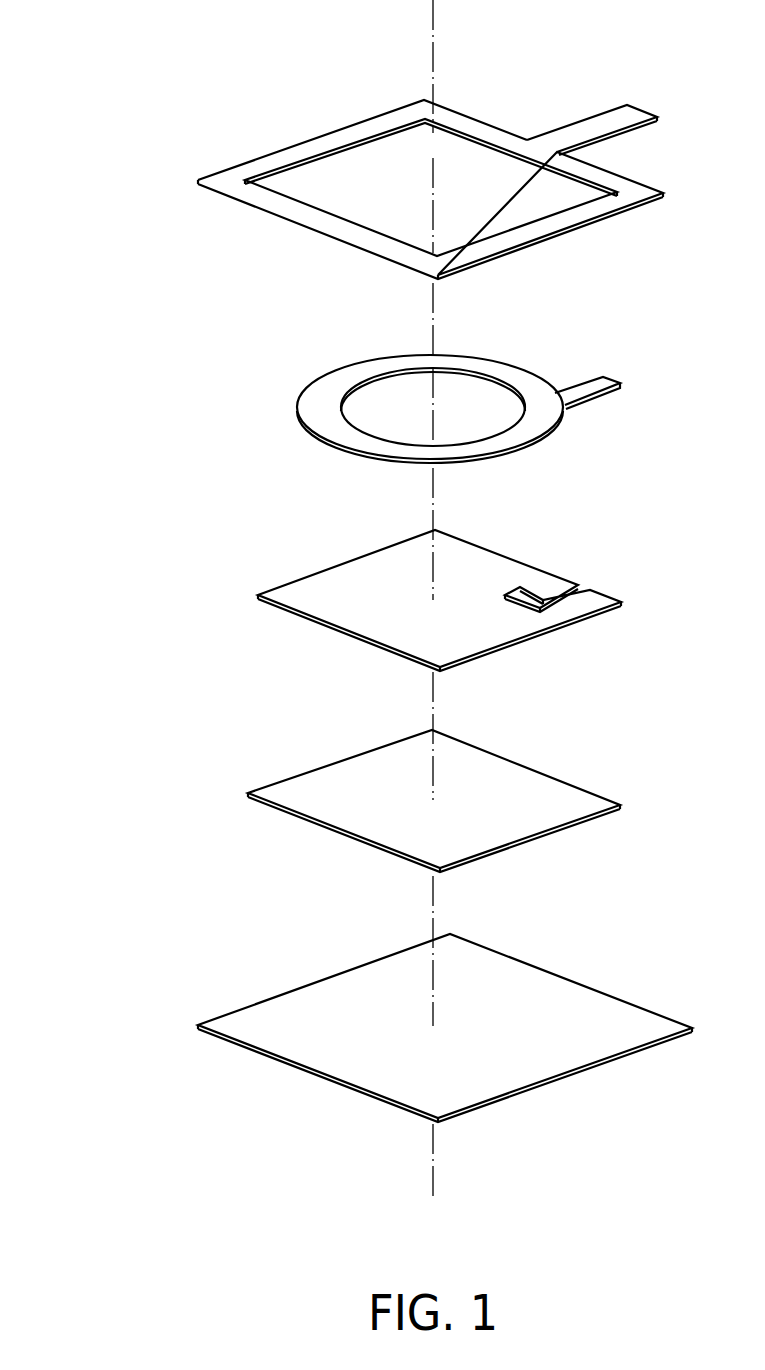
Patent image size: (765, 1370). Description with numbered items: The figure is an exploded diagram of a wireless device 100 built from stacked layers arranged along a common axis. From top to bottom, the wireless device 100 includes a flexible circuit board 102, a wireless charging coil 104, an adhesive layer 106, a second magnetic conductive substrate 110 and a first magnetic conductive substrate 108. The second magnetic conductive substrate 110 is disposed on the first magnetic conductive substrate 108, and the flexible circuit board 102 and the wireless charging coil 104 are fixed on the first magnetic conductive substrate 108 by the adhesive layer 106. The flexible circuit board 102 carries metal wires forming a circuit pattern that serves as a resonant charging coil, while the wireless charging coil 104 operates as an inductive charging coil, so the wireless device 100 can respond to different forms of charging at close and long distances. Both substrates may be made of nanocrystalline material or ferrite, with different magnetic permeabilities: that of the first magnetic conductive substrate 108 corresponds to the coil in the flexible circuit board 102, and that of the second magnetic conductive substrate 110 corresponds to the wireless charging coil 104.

The wireless device 100 is at (158, 84).
The flexible circuit board 102 is at (557, 240).
The wireless charging coil 104 is at (557, 437).
The adhesive layer 106 is at (557, 632).
The second magnetic conductive substrate 110 is at (555, 833).
The first magnetic conductive substrate 108 is at (558, 1083).